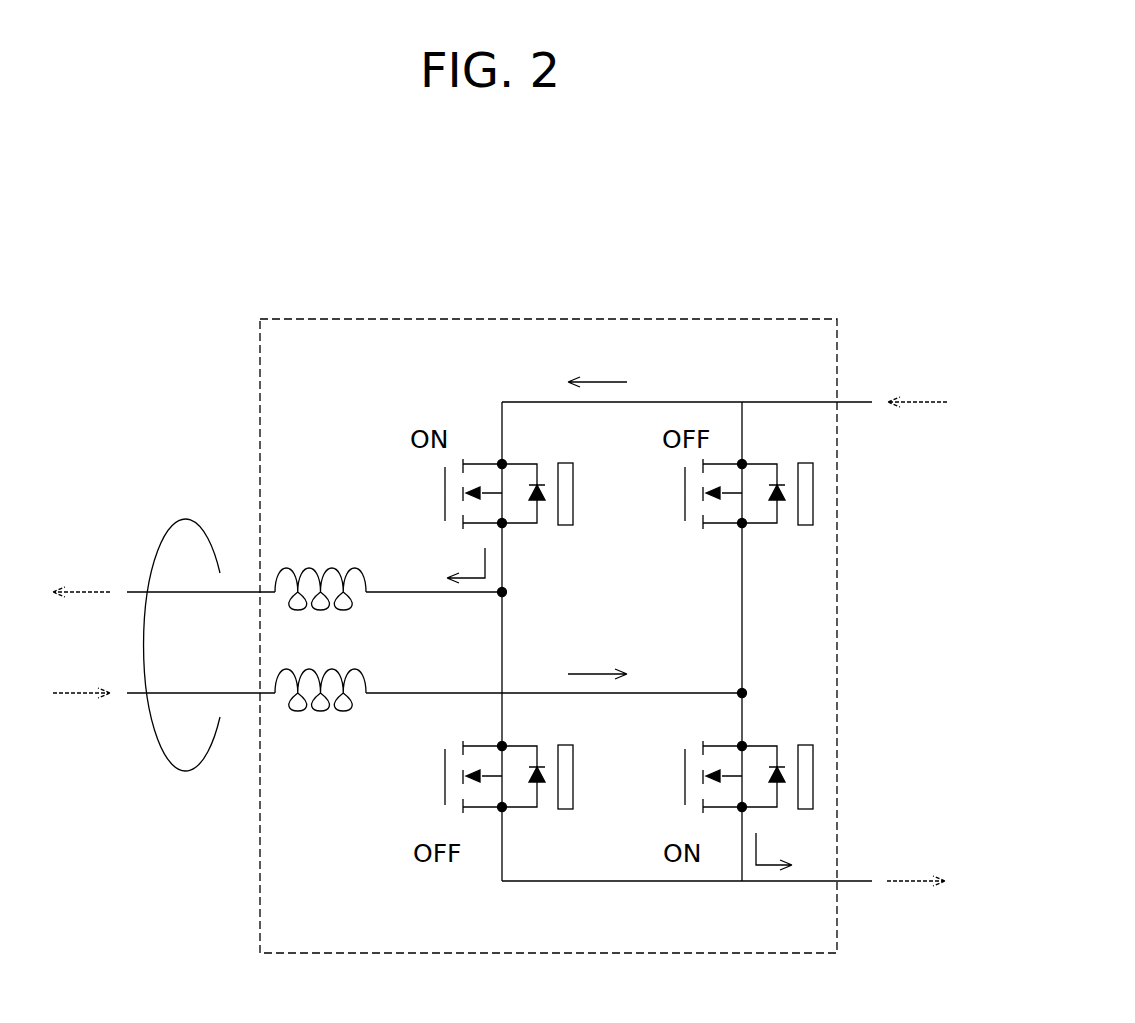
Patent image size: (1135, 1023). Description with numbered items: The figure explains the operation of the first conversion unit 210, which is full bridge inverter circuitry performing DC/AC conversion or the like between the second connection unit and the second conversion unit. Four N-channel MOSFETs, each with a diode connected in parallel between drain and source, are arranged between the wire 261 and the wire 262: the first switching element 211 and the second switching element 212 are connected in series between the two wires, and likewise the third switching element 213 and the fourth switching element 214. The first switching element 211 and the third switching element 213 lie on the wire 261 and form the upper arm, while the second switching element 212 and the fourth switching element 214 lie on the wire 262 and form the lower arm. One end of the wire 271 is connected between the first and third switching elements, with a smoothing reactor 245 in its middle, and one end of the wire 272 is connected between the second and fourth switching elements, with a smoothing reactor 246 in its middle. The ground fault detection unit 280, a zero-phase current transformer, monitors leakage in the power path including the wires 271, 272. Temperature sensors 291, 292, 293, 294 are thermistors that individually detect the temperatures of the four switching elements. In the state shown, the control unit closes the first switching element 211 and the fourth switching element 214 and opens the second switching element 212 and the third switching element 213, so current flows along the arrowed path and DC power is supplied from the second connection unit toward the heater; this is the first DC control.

The first conversion unit 210 is at (398, 316).
The first switching element 211 is at (540, 525).
The second switching element 212 is at (540, 809).
The third switching element 213 is at (780, 525).
The fourth switching element 214 is at (767, 746).
The smoothing reactor 245 is at (310, 568).
The smoothing reactor 246 is at (322, 708).
The wire 261 is at (675, 402).
The wire 262 is at (640, 884).
The wire 271 is at (393, 591).
The wire 272 is at (407, 695).
The ground fault detection unit 280 is at (183, 525).
The temperature sensor 291 is at (573, 495).
The temperature sensor 292 is at (573, 768).
The temperature sensor 293 is at (815, 495).
The temperature sensor 294 is at (815, 768).